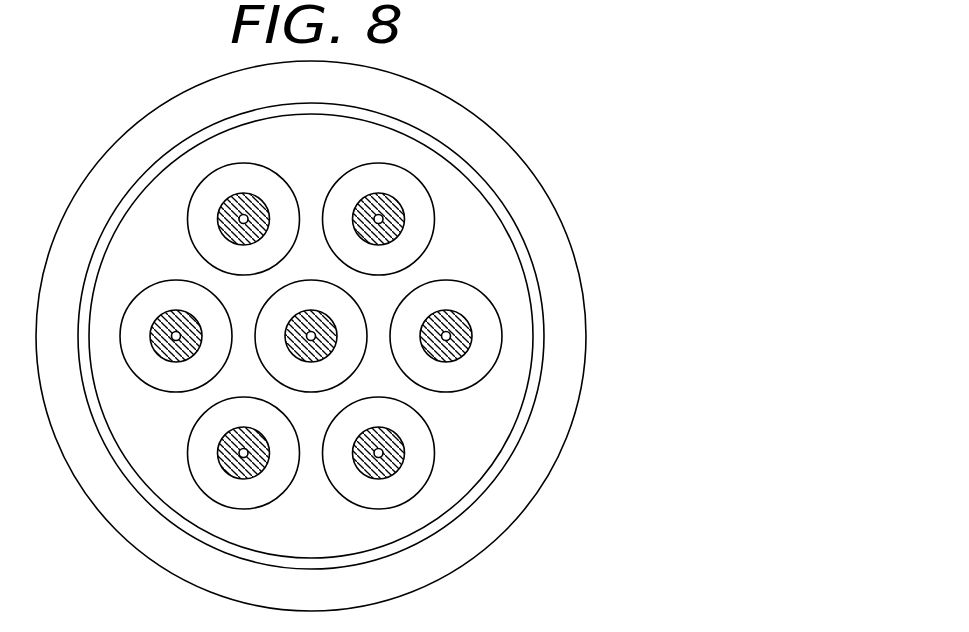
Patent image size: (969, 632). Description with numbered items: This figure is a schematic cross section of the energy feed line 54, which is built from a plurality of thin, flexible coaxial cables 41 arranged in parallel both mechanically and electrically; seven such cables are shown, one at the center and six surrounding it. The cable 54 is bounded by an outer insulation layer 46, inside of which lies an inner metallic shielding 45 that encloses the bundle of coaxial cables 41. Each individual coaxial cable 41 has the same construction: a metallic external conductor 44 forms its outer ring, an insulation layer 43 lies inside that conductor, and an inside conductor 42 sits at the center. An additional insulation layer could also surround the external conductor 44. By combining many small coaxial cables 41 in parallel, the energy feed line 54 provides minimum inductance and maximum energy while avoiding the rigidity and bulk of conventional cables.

The coaxial cable 41 is at (422, 207).
The inside conductor 42 is at (447, 336).
The insulation layer 43 is at (468, 355).
The metallic external conductor 44 is at (467, 388).
The inner metallic shielding 45 is at (497, 467).
The outer insulation layer 46 is at (415, 567).
The energy feed line 54 is at (308, 176).